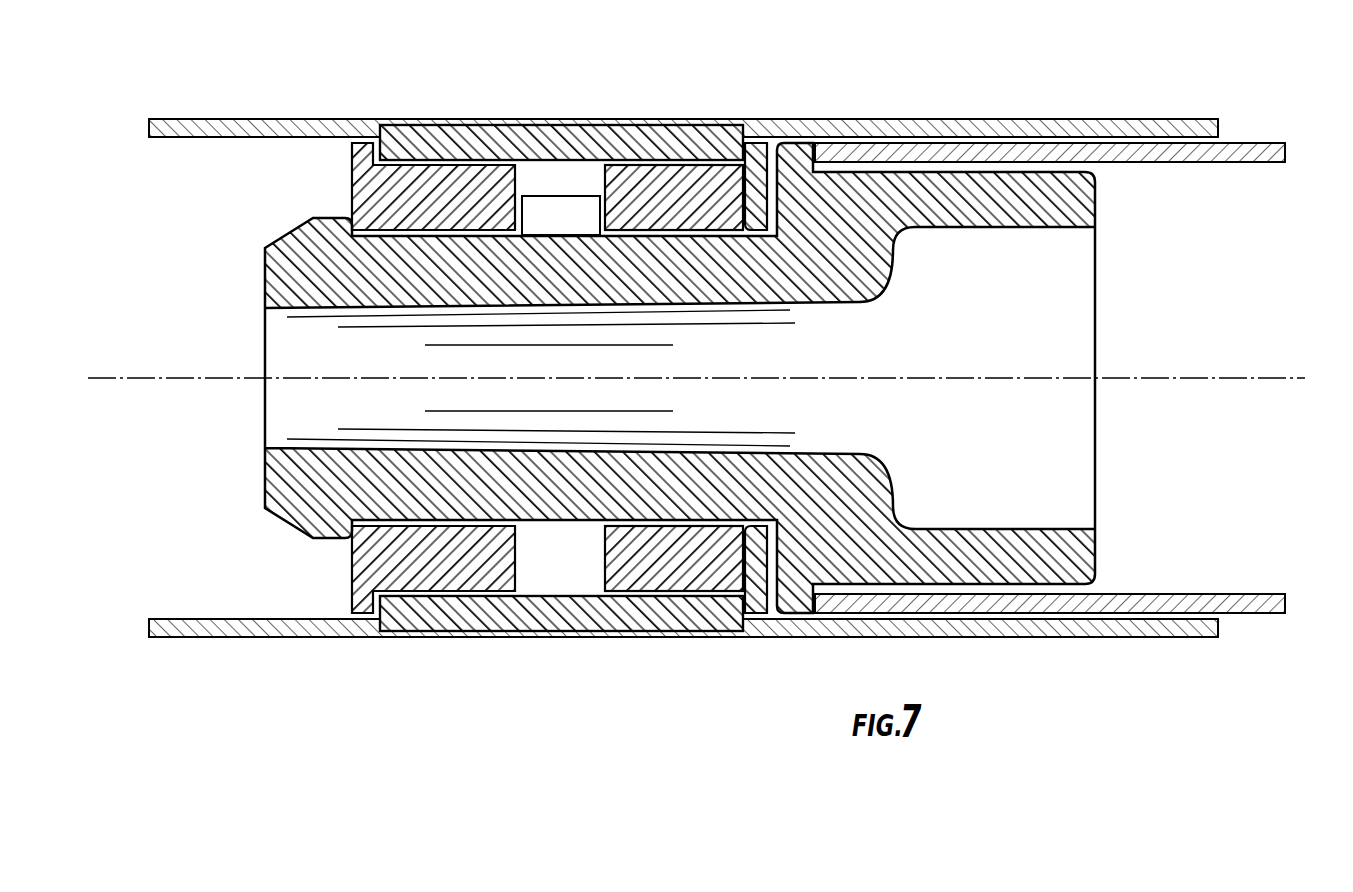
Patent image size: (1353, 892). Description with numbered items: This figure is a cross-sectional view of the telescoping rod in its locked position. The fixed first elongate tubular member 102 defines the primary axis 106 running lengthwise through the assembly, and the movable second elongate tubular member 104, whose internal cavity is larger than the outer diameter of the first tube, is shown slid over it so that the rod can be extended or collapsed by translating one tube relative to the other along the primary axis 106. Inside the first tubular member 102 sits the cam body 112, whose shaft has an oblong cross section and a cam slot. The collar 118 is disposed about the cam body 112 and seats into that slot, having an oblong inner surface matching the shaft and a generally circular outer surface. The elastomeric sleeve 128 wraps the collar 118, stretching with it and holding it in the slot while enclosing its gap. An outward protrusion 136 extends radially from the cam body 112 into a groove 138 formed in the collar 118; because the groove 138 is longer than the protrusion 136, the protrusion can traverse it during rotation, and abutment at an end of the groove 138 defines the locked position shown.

The first elongate tubular member 102 is at (1250, 143).
The second elongate tubular member 104 is at (190, 118).
The primary axis 106 is at (150, 378).
The cam body 112 is at (265, 282).
The collar 118 is at (363, 203).
The elastomeric sleeve 128 is at (688, 140).
The outward protrusion 136 is at (580, 203).
The groove 138 is at (557, 183).